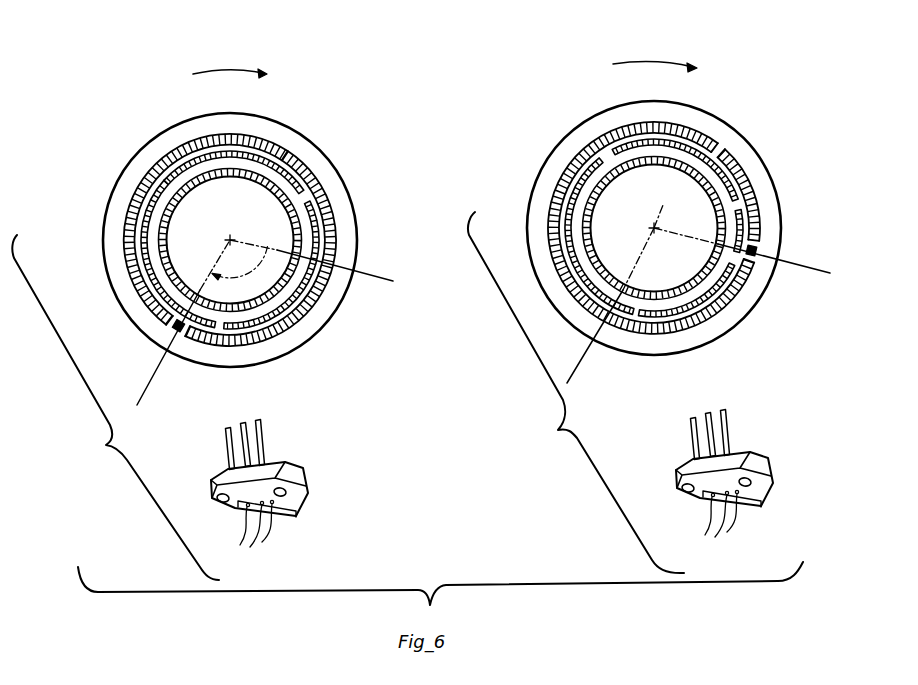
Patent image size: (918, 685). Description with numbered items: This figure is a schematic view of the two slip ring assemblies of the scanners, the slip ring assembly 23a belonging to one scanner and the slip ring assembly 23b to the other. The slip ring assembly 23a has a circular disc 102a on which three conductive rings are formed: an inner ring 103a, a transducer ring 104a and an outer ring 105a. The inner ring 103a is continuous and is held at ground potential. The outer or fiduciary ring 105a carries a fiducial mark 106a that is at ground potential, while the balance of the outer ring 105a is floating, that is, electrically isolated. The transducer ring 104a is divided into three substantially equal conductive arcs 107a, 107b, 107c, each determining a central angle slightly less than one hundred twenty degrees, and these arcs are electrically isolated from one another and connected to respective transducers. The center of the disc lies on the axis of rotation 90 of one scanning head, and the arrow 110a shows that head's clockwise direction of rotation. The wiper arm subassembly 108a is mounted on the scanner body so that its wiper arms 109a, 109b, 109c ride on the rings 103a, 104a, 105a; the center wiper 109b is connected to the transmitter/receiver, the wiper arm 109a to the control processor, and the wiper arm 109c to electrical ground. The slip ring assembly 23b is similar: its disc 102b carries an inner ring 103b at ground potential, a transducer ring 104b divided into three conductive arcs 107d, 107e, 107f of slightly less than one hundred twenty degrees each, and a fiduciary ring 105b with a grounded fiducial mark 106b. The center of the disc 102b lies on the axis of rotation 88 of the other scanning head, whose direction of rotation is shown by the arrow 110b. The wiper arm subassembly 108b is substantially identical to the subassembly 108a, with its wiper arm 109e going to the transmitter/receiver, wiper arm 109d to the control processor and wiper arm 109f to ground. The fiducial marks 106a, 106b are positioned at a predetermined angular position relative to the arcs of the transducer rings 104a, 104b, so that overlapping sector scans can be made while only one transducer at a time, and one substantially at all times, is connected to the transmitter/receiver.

The circular disc 102a is at (108, 203).
The disc 102b is at (778, 190).
The inner ring 103a is at (183, 208).
The inner ring 103b is at (614, 197).
The transducer ring 104a is at (160, 176).
The transducer ring 104b is at (620, 160).
The outer ring 105a is at (283, 145).
The fiduciary ring 105b is at (722, 142).
The fiducial mark 106a is at (182, 333).
The fiducial mark 106b is at (754, 257).
The conductive arc 107a is at (195, 157).
The conductive arc 107b is at (312, 243).
The conductive arc 107c is at (152, 270).
The conductive arc 107d is at (622, 152).
The conductive arc 107e is at (740, 226).
The conductive arc 107f is at (570, 233).
The wiper arm subassembly 108a is at (367, 502).
The wiper arm subassembly 108b is at (833, 492).
The wiper arm 109a is at (228, 434).
The wiper arm 109b is at (246, 420).
The wiper arm 109c is at (270, 440).
The wiper arm 109d is at (693, 422).
The wiper arm 109e is at (700, 417).
The wiper arm 109f is at (732, 425).
The arrow 110a is at (235, 63).
The arrow 110b is at (652, 60).
The slip ring assembly 23a is at (115, 407).
The slip ring assembly 23b is at (576, 392).
The axis of rotation 88 is at (658, 227).
The axis of rotation 90 is at (230, 238).